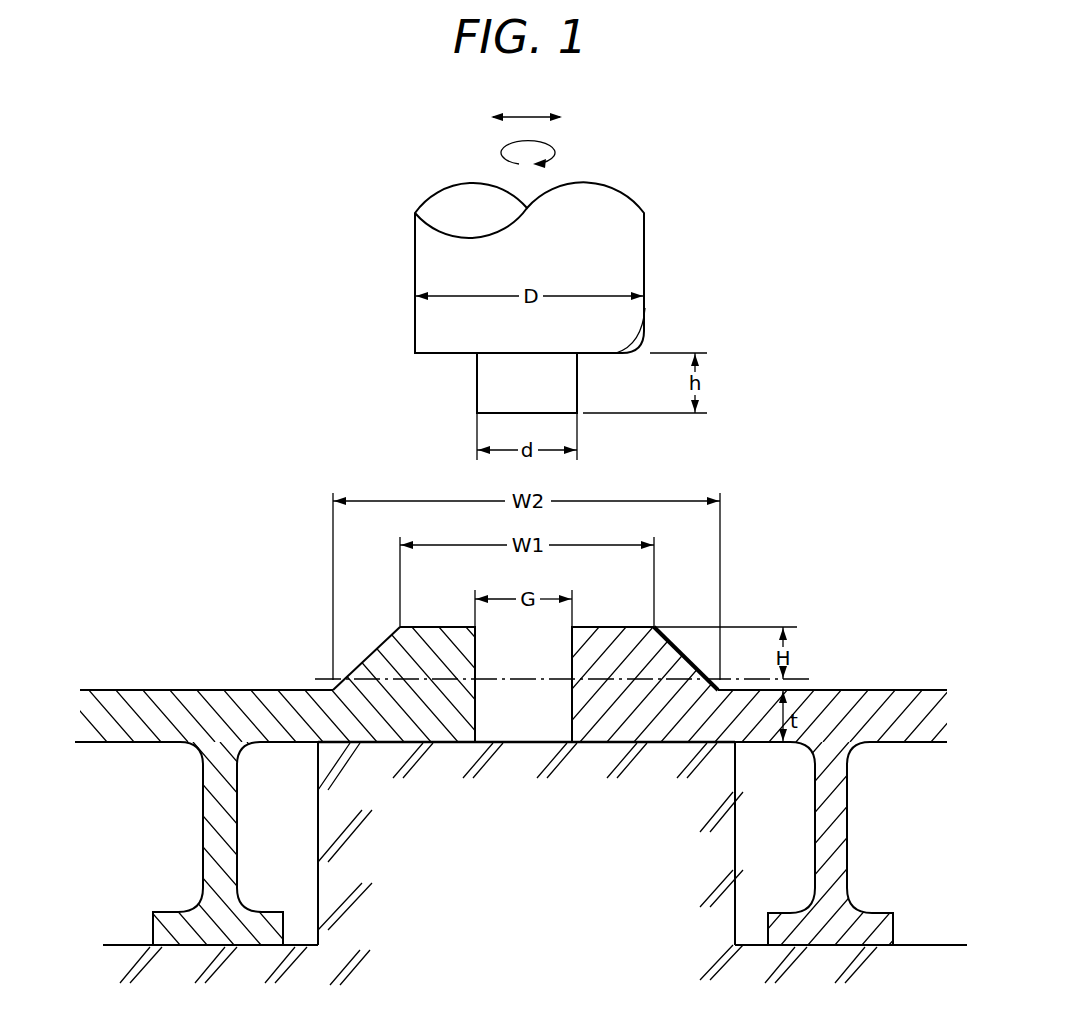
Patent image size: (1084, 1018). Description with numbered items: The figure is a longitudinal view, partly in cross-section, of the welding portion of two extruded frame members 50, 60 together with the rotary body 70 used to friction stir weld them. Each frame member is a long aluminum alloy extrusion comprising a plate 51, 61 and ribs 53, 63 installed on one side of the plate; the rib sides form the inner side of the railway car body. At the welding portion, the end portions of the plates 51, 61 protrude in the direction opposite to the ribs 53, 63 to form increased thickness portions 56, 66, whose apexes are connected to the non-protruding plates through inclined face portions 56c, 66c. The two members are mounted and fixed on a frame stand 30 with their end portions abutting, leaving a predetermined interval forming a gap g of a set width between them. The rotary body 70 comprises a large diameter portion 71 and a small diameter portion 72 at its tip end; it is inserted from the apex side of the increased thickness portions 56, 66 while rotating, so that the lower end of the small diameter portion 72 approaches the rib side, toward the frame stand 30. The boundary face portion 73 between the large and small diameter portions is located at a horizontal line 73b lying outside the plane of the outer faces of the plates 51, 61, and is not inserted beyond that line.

The rotary body 70 is at (398, 251).
The large diameter portion 71 is at (647, 252).
The small diameter portion 72 is at (571, 383).
The boundary face portion 73 is at (648, 333).
The horizontal line (position of boundary face portion) 73b is at (320, 677).
The extruded frame member 60 is at (219, 566).
The plate 61 is at (165, 688).
The rib 63 is at (203, 820).
The increased thickness portion 66 is at (385, 655).
The inclined face portion 66c is at (355, 667).
The extruded frame member 50 is at (831, 600).
The plate 51 is at (860, 705).
The rib 53 is at (833, 838).
The increased thickness portion 56 is at (607, 647).
The inclined face portion 56c is at (690, 648).
The gap g is at (518, 745).
The frame stand 30 is at (566, 900).